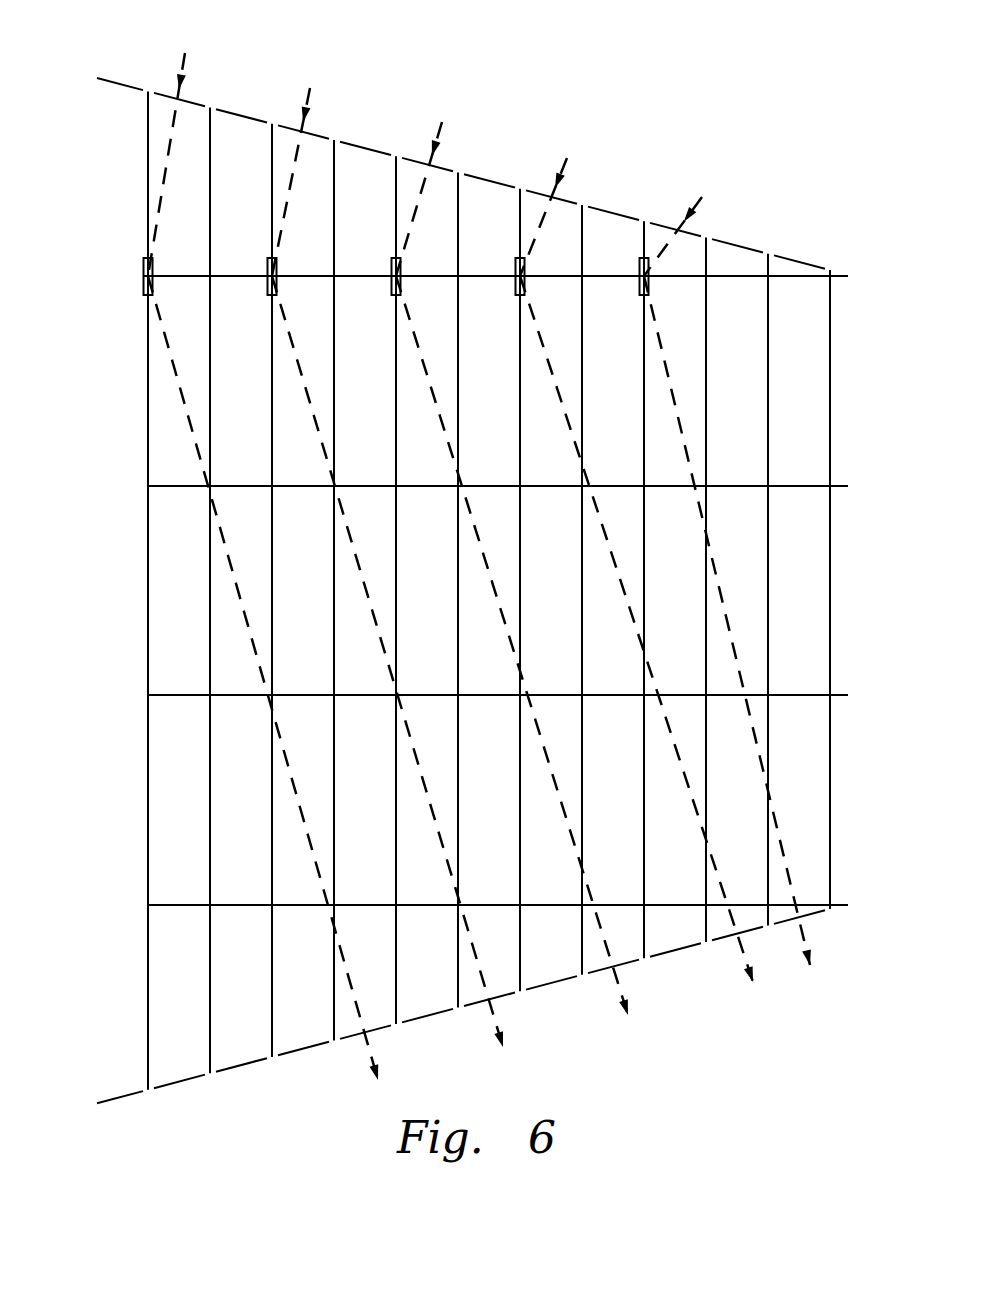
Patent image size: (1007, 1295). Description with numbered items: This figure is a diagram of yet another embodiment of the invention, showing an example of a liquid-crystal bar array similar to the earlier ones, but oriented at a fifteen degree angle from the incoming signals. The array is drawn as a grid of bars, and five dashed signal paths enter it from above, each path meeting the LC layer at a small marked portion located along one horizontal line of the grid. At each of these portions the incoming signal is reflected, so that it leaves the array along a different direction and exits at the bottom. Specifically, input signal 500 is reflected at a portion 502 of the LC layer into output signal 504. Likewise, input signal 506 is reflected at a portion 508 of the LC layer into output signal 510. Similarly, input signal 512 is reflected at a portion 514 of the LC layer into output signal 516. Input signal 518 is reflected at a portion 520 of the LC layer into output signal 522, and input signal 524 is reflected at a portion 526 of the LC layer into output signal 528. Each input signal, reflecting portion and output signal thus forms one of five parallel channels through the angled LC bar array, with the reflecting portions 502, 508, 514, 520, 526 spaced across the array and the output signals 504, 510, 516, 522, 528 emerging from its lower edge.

The input signal 500 is at (185, 53).
The portion of the LC layer 502 is at (143, 292).
The output signal 504 is at (366, 1040).
The input signal 506 is at (310, 88).
The portion of the LC layer 508 is at (267, 292).
The output signal 510 is at (491, 1012).
The input signal 512 is at (442, 122).
The portion of the LC layer 514 is at (391, 292).
The output signal 516 is at (614, 975).
The input signal 518 is at (567, 158).
The portion of the LC layer 520 is at (515, 292).
The output signal 522 is at (735, 945).
The input signal 524 is at (702, 197).
The portion of the LC layer 526 is at (639, 292).
The output signal 528 is at (806, 935).